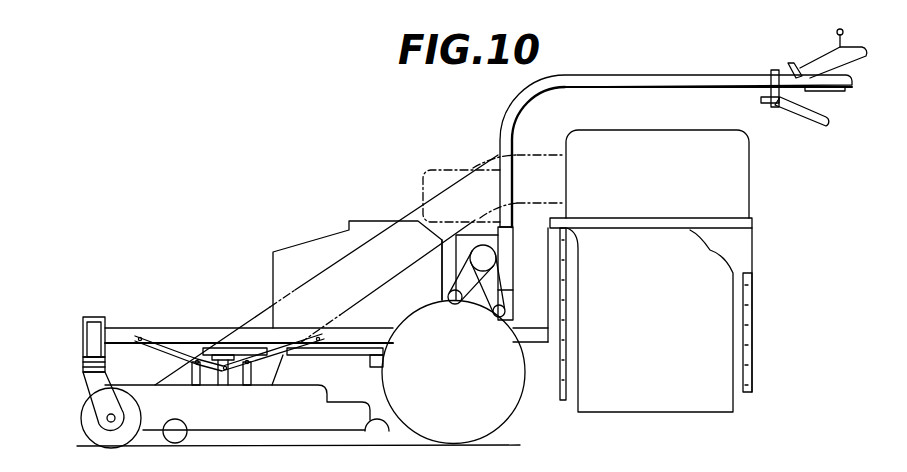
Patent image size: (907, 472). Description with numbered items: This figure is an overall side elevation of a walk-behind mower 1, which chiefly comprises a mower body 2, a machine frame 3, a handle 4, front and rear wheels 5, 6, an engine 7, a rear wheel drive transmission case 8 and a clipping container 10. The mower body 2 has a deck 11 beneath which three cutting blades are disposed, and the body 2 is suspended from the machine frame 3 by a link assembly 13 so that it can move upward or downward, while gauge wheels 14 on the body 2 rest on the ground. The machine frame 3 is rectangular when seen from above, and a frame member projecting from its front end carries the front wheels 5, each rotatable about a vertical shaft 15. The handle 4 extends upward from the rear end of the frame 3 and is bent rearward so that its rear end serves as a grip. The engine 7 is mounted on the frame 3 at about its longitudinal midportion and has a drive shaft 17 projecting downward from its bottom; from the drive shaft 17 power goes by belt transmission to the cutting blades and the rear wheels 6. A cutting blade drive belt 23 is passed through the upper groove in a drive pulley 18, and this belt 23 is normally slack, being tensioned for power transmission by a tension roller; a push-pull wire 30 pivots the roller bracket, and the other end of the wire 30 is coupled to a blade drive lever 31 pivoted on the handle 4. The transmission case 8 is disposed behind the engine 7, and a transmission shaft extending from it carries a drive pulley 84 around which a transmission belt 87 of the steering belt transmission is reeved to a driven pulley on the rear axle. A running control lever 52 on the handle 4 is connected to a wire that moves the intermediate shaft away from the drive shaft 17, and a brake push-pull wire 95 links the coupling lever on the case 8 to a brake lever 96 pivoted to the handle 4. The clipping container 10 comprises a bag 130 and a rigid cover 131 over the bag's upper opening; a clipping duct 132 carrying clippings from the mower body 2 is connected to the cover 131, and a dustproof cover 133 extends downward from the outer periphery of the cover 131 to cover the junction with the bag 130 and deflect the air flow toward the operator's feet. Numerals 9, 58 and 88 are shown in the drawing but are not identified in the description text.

The mower 1 is at (228, 322).
The mower body 2 is at (255, 423).
The machine frame 3 is at (188, 332).
The handle 4 is at (724, 77).
The front wheels 5 is at (93, 423).
The rear wheels 6 is at (497, 403).
The engine 7 is at (318, 250).
The rear wheel drive transmission case 8 is at (491, 261).
The handle folded position 9 is at (455, 173).
The clipping container 10 is at (680, 276).
The deck 11 is at (327, 418).
The link assembly 13 is at (157, 357).
The gauge wheels 14 is at (187, 437).
The vertical shaft 15 is at (98, 330).
The drive shaft 17 is at (367, 337).
The drive pulley 18 is at (383, 359).
The cutting blade drive belt 23 is at (352, 357).
The push-pull wire 30 is at (782, 66).
The blade drive lever 31 is at (832, 80).
The running control lever 52 is at (844, 32).
The control lever 58 is at (847, 68).
The drive pulley 84 is at (520, 273).
The transmission belt 87 is at (498, 312).
The pulley 88 is at (452, 304).
The brake push-pull wire 95 is at (766, 88).
The brake lever 96 is at (803, 115).
The bag 130 is at (665, 397).
The rigid cover 131 is at (633, 141).
The clipping duct 132 is at (413, 213).
The dustproof cover 133 is at (740, 380).